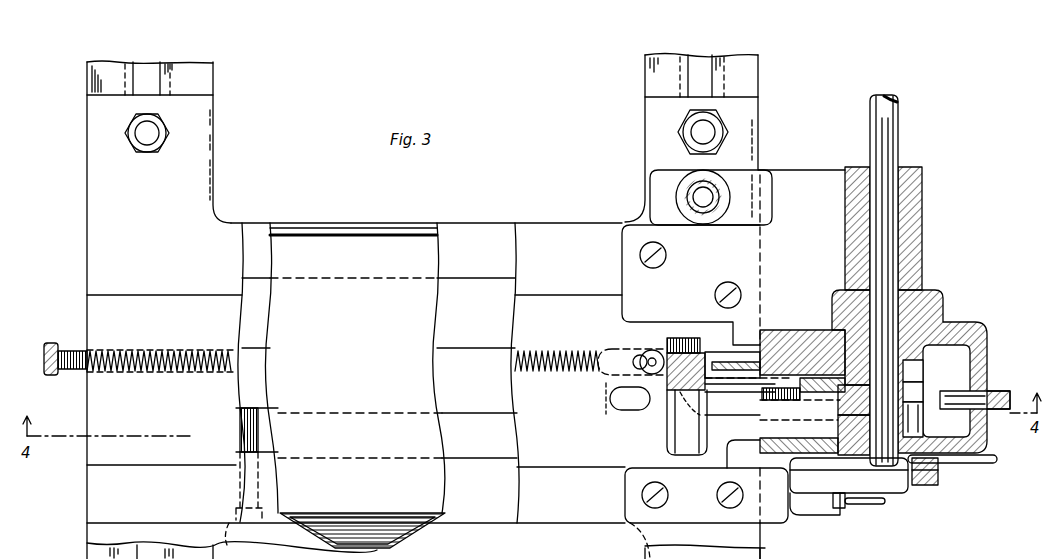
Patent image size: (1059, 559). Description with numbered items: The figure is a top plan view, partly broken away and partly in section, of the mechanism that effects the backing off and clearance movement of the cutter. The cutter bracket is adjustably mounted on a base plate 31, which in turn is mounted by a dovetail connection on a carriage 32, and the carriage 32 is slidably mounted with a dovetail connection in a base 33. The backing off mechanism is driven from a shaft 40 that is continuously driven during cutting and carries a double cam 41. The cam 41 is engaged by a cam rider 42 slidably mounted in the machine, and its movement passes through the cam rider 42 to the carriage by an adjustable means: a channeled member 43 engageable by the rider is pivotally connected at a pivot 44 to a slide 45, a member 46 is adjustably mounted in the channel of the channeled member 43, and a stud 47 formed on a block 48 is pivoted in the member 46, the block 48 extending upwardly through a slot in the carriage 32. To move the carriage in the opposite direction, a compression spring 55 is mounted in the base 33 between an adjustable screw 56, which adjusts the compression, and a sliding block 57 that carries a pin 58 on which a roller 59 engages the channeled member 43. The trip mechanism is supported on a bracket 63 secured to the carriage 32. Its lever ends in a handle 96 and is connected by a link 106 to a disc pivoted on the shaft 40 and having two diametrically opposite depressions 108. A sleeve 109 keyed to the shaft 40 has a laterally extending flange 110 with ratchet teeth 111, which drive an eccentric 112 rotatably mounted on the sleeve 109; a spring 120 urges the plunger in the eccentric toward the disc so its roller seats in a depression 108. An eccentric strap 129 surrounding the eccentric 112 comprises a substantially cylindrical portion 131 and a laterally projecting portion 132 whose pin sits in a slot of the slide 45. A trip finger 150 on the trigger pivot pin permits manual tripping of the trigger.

The base plate 31 is at (320, 246).
The carriage 32 is at (478, 236).
The base 33 is at (548, 232).
The shaft 40 is at (894, 137).
The cam 41 is at (940, 340).
The cam rider 42 is at (728, 358).
The channeled member 43 is at (677, 432).
The pivotal connection 44 is at (703, 418).
The slide 45 is at (645, 404).
The member 46 is at (672, 352).
The stud 47 is at (709, 352).
The block 48 is at (775, 403).
The compression spring 55 is at (205, 378).
The adjustable screw 56 is at (68, 347).
The sliding block 57 is at (622, 352).
The pin 58 is at (636, 358).
The roller 59 is at (648, 353).
The bracket 63 is at (786, 338).
The handle 96 is at (992, 459).
The link 106 is at (940, 468).
The depressions 108 is at (868, 456).
The sleeve 109 is at (887, 393).
The flange 110 is at (918, 370).
The ratchet teeth 111 is at (870, 370).
The eccentric 112 is at (916, 386).
The spring 120 is at (944, 424).
The eccentric strap 129 is at (973, 393).
The cylindrical portion 131 is at (838, 420).
The laterally projecting portion 132 is at (840, 408).
The trip finger 150 is at (852, 506).